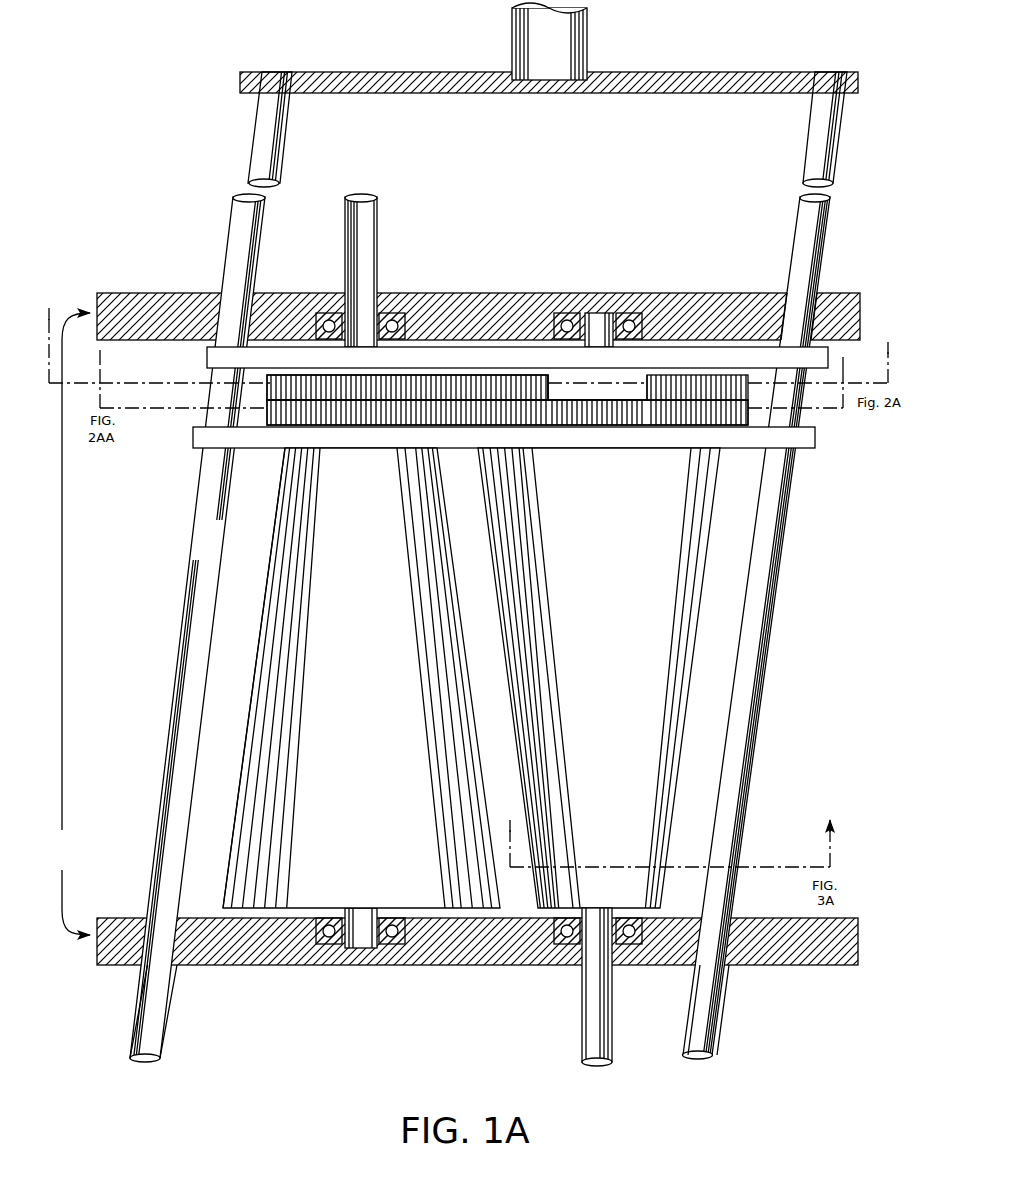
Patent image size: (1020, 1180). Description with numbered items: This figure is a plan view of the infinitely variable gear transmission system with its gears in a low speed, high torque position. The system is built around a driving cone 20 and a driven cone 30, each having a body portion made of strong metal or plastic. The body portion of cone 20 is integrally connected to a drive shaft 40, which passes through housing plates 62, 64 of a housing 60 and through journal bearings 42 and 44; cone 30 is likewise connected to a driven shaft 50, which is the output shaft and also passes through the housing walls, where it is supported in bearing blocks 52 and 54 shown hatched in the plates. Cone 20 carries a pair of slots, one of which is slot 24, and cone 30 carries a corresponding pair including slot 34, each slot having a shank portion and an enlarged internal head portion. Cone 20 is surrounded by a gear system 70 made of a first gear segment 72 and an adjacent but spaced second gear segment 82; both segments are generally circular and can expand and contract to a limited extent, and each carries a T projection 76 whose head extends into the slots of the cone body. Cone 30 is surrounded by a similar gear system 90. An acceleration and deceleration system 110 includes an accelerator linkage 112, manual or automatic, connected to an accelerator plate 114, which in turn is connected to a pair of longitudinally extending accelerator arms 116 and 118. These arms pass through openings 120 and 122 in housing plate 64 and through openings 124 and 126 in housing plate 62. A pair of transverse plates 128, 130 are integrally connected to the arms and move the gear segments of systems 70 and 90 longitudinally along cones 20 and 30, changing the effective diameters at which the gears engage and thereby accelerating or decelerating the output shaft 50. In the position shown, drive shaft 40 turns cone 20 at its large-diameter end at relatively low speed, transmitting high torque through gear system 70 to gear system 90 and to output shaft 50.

The acceleration and deceleration system 110 is at (383, 60).
The accelerator linkage 112 is at (590, 40).
The accelerator plate 114 is at (698, 72).
The accelerator arm 118 is at (272, 135).
The housing plate 64 is at (852, 93).
The driven shaft 50 is at (398, 237).
The accelerator arm 116 is at (815, 207).
The opening 120 is at (812, 298).
The opening 122 is at (233, 297).
The bearing 52 is at (391, 313).
The T projection 76 is at (553, 380).
The journal bearing 42 is at (630, 313).
The surrounding gear system 70 is at (757, 393).
The first gear segment 72 is at (360, 392).
The second gear segment 82 is at (360, 416).
The transverse plate 128 is at (822, 368).
The transverse plate 130 is at (805, 448).
The slot 34 is at (410, 583).
The slot 24 is at (555, 583).
The driven cone 30 is at (230, 665).
The driving cone 20 is at (705, 717).
The surrounding gear system 90 is at (218, 848).
The housing 60 is at (68, 624).
The opening 126 is at (150, 962).
The bearing 54 is at (393, 947).
The drive shaft 40 is at (580, 995).
The journal bearing 44 is at (630, 947).
The opening 124 is at (722, 965).
The housing plate 62 is at (832, 935).